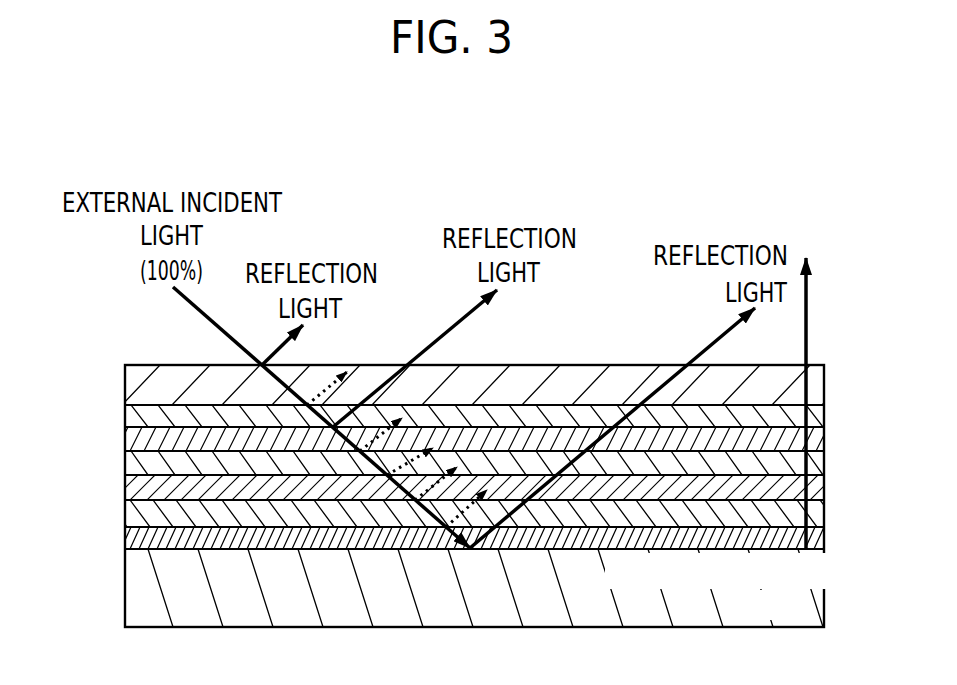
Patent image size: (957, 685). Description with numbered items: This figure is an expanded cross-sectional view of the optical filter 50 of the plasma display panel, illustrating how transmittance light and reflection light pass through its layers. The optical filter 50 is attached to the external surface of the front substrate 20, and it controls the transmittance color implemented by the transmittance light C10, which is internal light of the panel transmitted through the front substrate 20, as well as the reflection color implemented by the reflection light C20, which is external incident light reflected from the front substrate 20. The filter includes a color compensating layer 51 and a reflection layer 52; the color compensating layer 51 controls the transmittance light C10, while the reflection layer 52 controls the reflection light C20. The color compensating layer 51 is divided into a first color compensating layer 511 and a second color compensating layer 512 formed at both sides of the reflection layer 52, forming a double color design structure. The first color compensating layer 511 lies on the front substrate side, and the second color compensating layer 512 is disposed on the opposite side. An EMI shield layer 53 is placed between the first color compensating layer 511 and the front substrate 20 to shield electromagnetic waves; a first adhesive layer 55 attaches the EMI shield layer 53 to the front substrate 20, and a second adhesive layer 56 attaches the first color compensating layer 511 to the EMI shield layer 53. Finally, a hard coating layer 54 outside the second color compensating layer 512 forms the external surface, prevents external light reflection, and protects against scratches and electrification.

The optical filter 50 is at (724, 191).
The hard coating layer 54 is at (138, 382).
The color compensating layer 51 is at (450, 441).
The second color compensating layer 512 is at (138, 418).
The reflection layer 52 is at (815, 438).
The first color compensating layer 511 is at (138, 460).
The second adhesive layer 56 is at (815, 485).
The EMI shield layer 53 is at (138, 510).
The first adhesive layer 55 is at (138, 538).
The front substrate 20 is at (138, 588).
The reflection light C20 is at (705, 348).
The transmittance light C10 is at (806, 318).